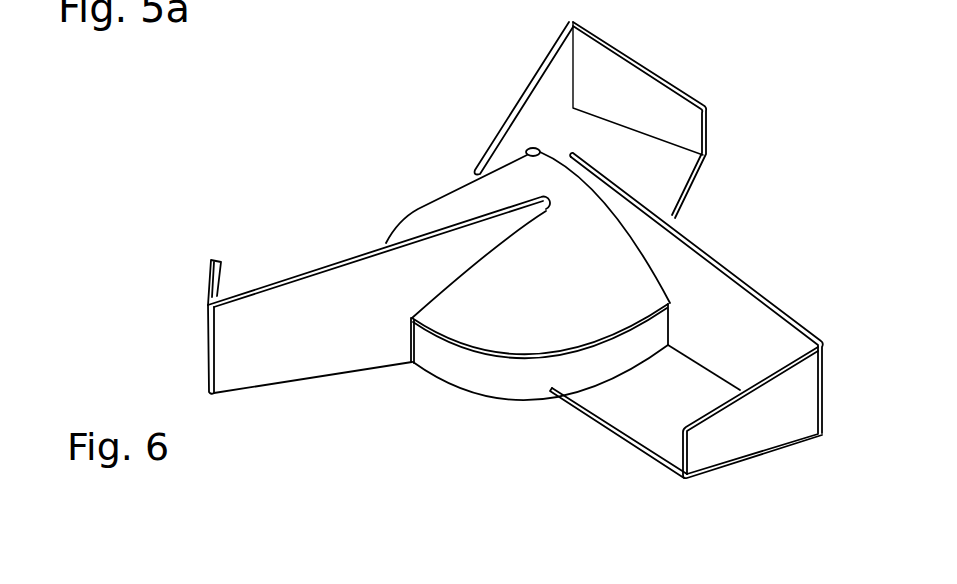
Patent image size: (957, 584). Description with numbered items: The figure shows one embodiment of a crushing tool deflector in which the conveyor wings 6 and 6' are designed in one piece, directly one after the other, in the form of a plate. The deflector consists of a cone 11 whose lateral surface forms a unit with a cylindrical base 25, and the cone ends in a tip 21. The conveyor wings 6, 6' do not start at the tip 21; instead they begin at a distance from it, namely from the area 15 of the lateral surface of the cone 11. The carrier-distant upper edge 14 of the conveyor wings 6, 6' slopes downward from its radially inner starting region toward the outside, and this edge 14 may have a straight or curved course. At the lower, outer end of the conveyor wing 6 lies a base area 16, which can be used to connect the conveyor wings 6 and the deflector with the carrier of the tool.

The conveyor wing 6 is at (752, 367).
The conveyor wing 6' is at (604, 125).
The cone 11 is at (523, 315).
The upper edge 14 is at (731, 274).
The area of the lateral surface of the cone 15 is at (551, 216).
The base area 16 is at (640, 401).
The tip 21 is at (527, 149).
The cylindrical base 25 is at (448, 358).